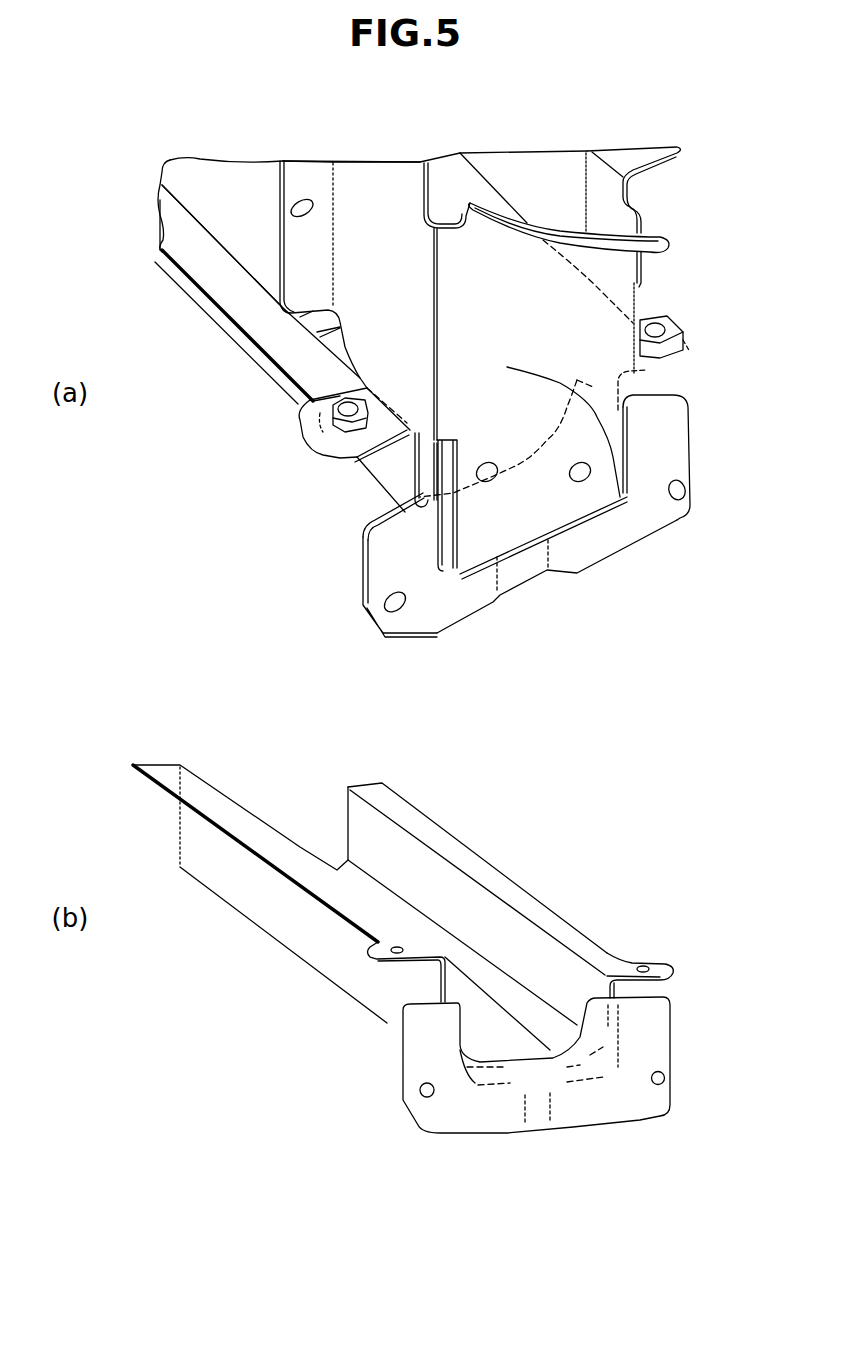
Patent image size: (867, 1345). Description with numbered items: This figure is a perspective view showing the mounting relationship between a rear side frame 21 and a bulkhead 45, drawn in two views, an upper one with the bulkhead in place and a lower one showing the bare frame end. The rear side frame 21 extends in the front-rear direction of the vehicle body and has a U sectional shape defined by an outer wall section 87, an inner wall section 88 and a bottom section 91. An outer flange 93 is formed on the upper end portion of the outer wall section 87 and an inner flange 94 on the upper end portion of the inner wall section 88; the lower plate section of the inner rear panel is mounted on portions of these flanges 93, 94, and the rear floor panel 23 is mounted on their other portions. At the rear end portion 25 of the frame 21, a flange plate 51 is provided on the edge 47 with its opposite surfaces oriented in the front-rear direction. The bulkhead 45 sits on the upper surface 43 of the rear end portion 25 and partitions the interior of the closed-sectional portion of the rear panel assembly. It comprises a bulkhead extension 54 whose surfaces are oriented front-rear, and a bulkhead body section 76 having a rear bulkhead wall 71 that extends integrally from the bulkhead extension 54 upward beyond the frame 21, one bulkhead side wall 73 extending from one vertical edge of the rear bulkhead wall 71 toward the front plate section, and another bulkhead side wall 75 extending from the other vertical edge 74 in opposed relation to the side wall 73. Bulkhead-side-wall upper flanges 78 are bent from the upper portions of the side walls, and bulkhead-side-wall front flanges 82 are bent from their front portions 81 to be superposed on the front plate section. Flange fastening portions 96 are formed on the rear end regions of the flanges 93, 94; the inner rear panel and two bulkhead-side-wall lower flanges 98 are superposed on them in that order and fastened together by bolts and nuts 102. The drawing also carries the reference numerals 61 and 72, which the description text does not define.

The rear side frame 21 is at (233, 364).
The rear floor panel 23 is at (257, 257).
The rear end portion 25 is at (373, 467).
The upper surface 43 is at (313, 370).
The bulkhead 45 is at (541, 194).
The edge 47 is at (400, 512).
The flange plate 51 is at (667, 455).
The bulkhead extension 54 is at (537, 497).
The blade flange 61 is at (650, 238).
The rear bulkhead wall 71 is at (620, 500).
The partition wall 72 is at (450, 303).
The bulkhead side wall 73 is at (383, 237).
The other vertical edge 74 is at (623, 297).
The bulkhead side wall 75 is at (600, 200).
The bulkhead body section 76 is at (337, 322).
The bulkhead-side-wall upper flange 78 is at (673, 170).
The front portion 81 is at (348, 187).
The bulkhead-side-wall front flange 82 is at (277, 275).
The outer wall section 87 is at (182, 226).
The inner wall section 88 is at (365, 830).
The bottom section 91 is at (480, 1033).
The outer flange 93 is at (307, 393).
The inner flange 94 is at (590, 290).
The flange fastening portion 96 is at (647, 380).
The bulkhead-side-wall lower flange 98 is at (343, 437).
The nut 102 is at (320, 430).